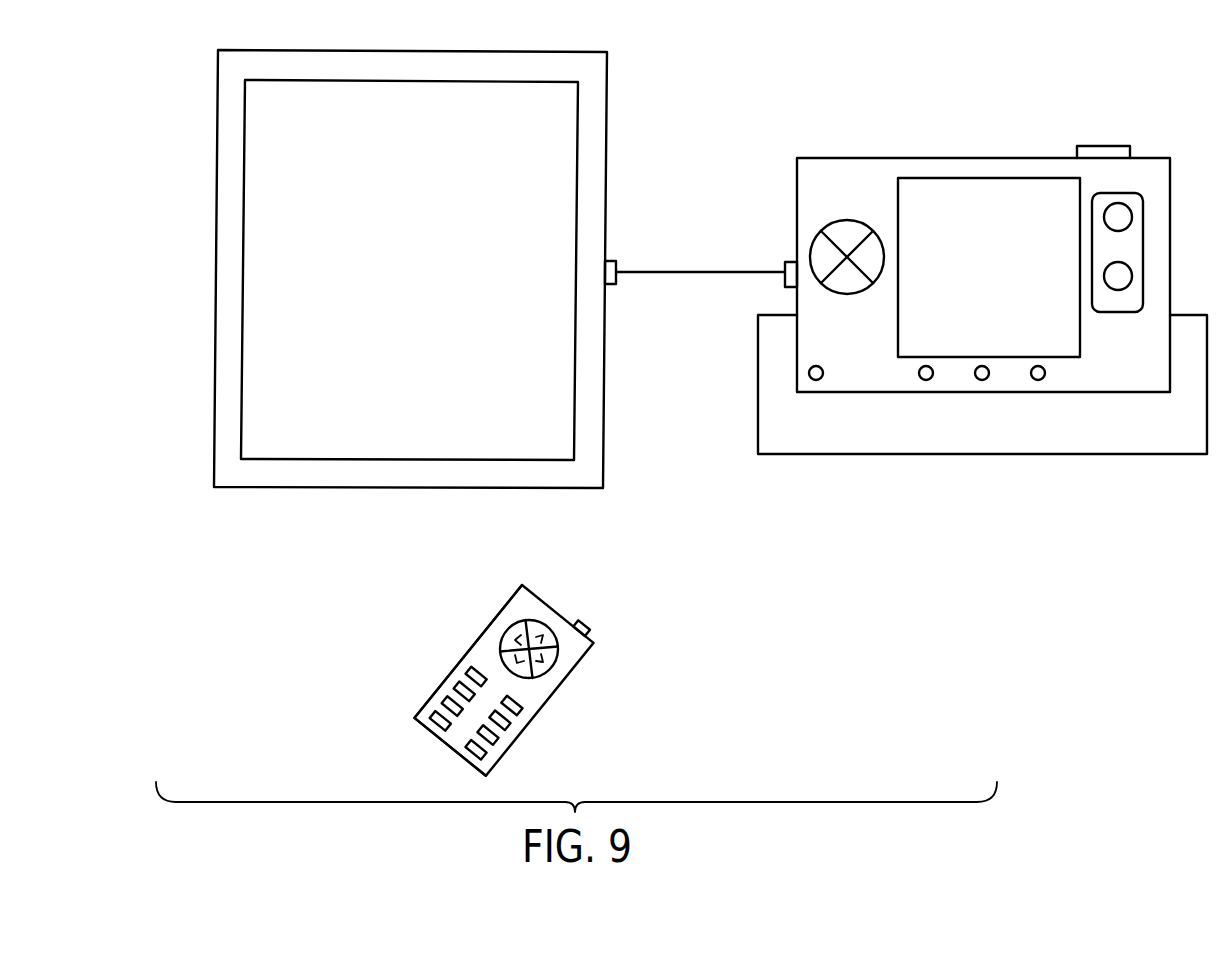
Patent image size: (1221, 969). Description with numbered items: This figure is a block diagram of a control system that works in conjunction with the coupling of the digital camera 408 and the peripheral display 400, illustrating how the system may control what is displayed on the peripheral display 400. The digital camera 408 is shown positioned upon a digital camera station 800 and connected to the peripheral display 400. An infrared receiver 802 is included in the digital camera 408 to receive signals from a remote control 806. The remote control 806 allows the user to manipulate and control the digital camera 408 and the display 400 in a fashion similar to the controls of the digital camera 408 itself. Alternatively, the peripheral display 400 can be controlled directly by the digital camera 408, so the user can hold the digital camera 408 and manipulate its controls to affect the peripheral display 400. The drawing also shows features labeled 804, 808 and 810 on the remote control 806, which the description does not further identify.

The peripheral display 400 is at (607, 128).
The digital camera 408 is at (956, 158).
The digital camera station 800 is at (1102, 455).
The infrared receiver 802 is at (816, 380).
The remote control 804 is at (583, 622).
The remote control 806 is at (482, 635).
The directional dial 808 is at (532, 620).
The buttons 810 is at (457, 686).